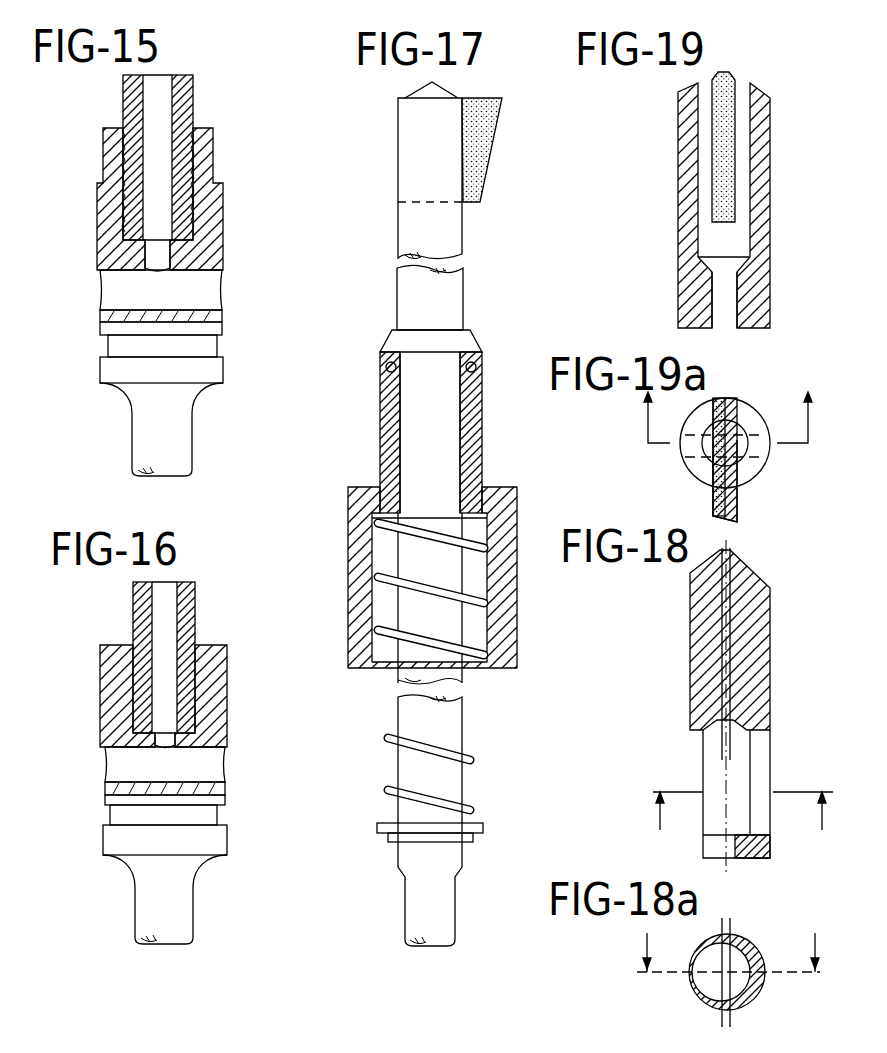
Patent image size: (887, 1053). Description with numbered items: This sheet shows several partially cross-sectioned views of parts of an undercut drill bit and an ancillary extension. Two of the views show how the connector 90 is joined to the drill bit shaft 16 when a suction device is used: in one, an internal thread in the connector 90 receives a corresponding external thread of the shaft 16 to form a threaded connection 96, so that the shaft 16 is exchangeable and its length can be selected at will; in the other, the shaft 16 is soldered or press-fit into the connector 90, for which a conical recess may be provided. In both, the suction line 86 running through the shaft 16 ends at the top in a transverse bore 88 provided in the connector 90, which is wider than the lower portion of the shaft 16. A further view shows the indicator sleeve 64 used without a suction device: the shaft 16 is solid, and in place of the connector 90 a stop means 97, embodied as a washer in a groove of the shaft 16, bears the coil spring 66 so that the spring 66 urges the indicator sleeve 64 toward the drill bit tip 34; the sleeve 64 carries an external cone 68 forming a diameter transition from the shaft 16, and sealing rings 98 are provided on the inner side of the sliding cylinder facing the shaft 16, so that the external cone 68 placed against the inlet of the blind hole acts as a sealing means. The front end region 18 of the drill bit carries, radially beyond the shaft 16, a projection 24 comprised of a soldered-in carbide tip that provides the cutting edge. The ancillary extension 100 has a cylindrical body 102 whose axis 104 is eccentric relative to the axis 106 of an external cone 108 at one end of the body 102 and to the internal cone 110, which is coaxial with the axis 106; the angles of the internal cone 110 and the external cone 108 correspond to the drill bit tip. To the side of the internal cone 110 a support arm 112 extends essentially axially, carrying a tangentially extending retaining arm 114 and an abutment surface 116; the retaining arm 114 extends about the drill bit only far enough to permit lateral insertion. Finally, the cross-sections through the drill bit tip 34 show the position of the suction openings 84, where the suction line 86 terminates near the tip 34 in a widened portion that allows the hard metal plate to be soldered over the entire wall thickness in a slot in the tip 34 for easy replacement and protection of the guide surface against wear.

In FIG. 15, the drill bit shaft 16 is at (123, 100).
In FIG. 16, the drill bit shaft 16 is at (133, 608).
In FIG. 17, the drill bit shaft 16 is at (430, 428).
In FIG. 17, the front end region 18 is at (398, 152).
In FIG. 19, the front end region 18 is at (770, 206).
In FIG. 17, the projection 24 is at (493, 153).
In FIG. 19A, the projection 24 is at (746, 498).
In FIG. 19, the drill bit tip 34 is at (726, 72).
In FIG. 19A, the drill bit tip 34 is at (735, 420).
In FIG. 18, the drill bit tip 34 is at (730, 556).
In FIG. 17, the indicator sleeve 64 is at (358, 522).
In FIG. 17, the coil spring 66 is at (478, 700).
In FIG. 17, the external cone 68 is at (393, 338).
In FIG. 19, the suction opening 84 is at (760, 136).
In FIG. 19, the suction line 86 is at (727, 300).
In FIG. 15, the transverse bore 88 is at (108, 292).
In FIG. 16, the transverse bore 88 is at (112, 762).
In FIG. 15, the connector 90 is at (110, 369).
In FIG. 16, the connector 90 is at (115, 837).
In FIG. 15, the threaded connection 96 is at (103, 157).
In FIG. 17, the stop means 97 is at (380, 825).
In FIG. 17, the sealing rings 98 is at (386, 368).
In FIG. 18, the ancillary extension 100 is at (760, 712).
In FIG. 18, the cylindrical body 102 is at (700, 655).
In FIG. 18, the axis of the cylindrical body 104 is at (700, 598).
In FIG. 18, the axis of the external cone 106 is at (770, 607).
In FIG. 18, the external cone 108 is at (740, 574).
In FIG. 18, the internal cone 110 is at (703, 730).
In FIG. 18, the support arm 112 is at (742, 760).
In FIG. 18A, the support arm 112 is at (757, 990).
In FIG. 18, the retaining arm 114 is at (742, 858).
In FIG. 18, the abutment surface 116 is at (760, 783).